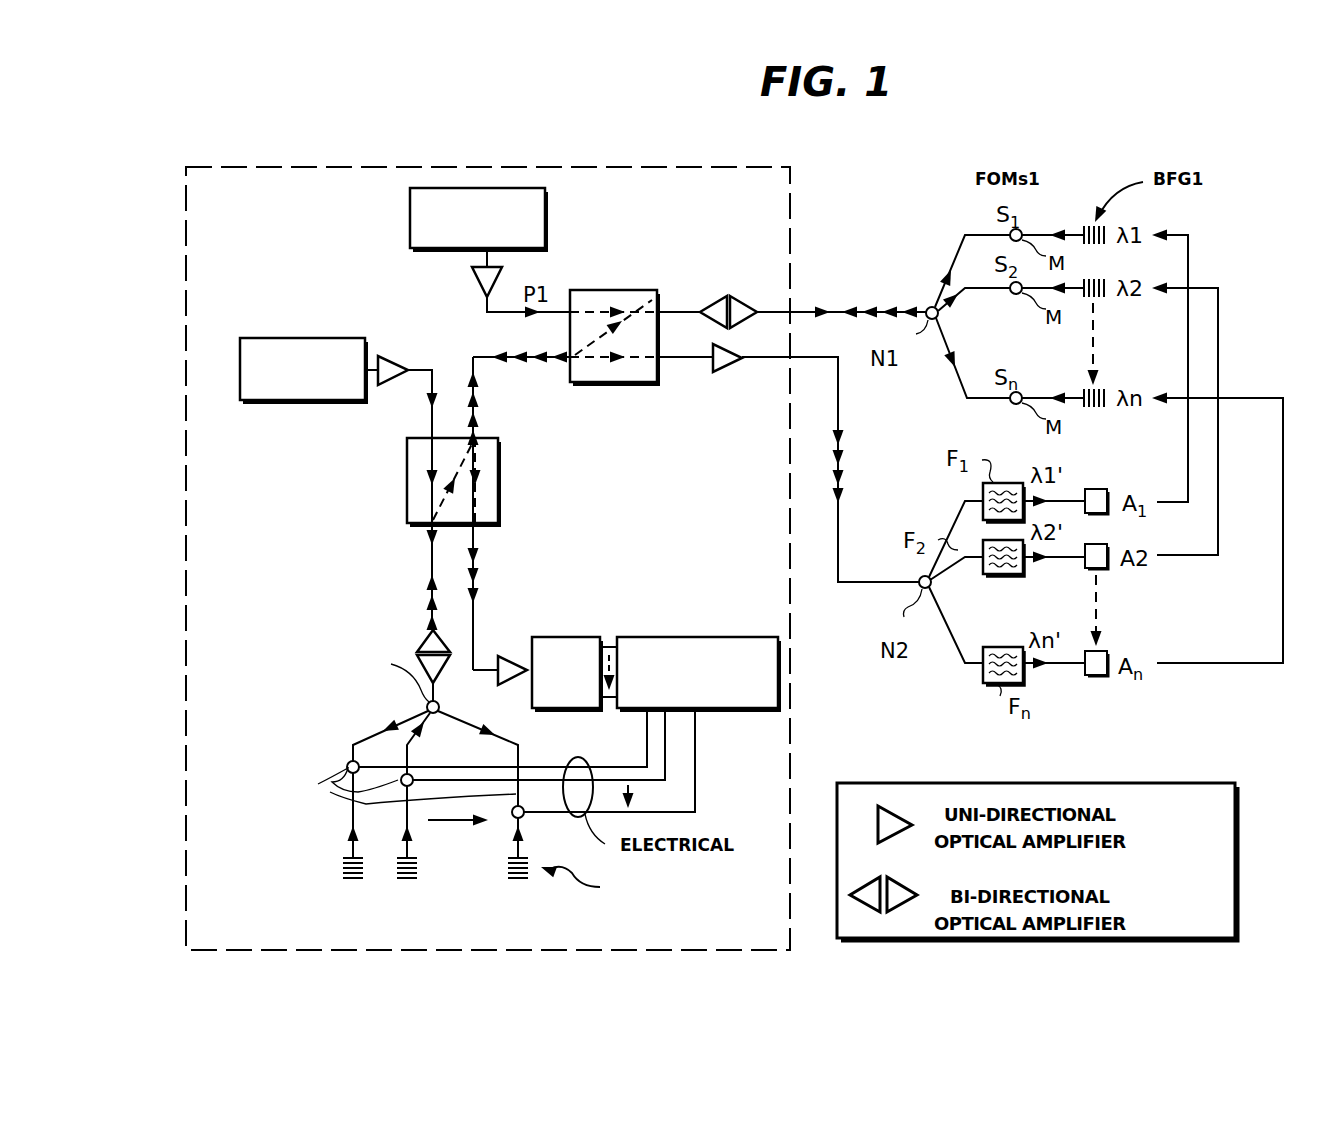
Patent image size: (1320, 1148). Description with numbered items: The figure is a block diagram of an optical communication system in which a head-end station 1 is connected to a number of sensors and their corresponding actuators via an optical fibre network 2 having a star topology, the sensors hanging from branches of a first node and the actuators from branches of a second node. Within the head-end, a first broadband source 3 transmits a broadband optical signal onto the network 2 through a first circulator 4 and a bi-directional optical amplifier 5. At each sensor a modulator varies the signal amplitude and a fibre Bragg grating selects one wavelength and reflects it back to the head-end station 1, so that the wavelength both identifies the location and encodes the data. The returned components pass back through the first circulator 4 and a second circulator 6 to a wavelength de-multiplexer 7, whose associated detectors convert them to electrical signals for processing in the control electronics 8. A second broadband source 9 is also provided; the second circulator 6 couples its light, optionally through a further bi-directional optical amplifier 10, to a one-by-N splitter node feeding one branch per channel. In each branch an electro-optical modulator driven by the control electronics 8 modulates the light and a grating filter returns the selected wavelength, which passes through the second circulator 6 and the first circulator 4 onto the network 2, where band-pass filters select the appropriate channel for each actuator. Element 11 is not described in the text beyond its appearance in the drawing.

The head-end station 1 is at (770, 213).
The optical fibre network 2 is at (883, 292).
The first broadband source 3 is at (547, 200).
The first circulator 4 is at (639, 290).
The bi-directional optical amplifier 5 is at (740, 292).
The second circulator 6 is at (499, 489).
The wavelength de-multiplexer 7 is at (566, 636).
The control electronics 8 is at (734, 636).
The second broadband source 9 is at (317, 338).
The further bi-directional optical amplifier 10 is at (421, 646).
The second fiber optic sensor network 11 is at (335, 724).